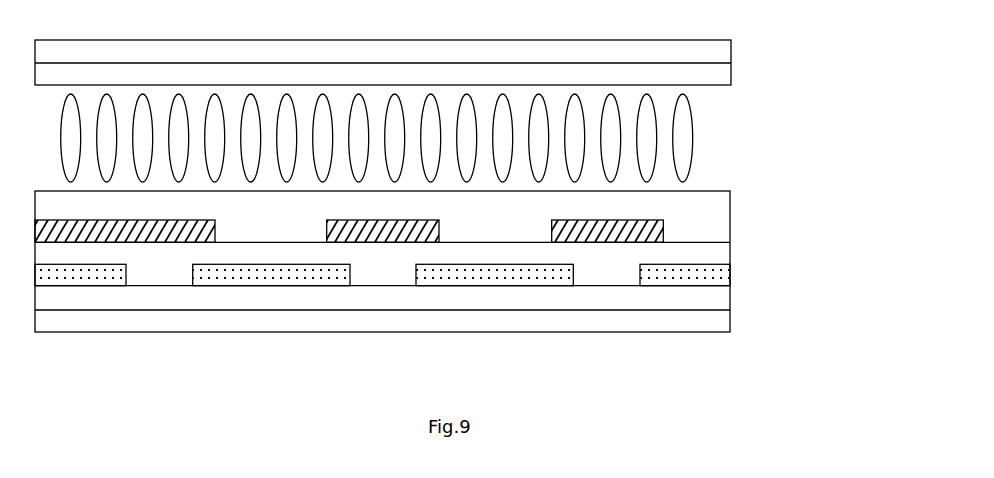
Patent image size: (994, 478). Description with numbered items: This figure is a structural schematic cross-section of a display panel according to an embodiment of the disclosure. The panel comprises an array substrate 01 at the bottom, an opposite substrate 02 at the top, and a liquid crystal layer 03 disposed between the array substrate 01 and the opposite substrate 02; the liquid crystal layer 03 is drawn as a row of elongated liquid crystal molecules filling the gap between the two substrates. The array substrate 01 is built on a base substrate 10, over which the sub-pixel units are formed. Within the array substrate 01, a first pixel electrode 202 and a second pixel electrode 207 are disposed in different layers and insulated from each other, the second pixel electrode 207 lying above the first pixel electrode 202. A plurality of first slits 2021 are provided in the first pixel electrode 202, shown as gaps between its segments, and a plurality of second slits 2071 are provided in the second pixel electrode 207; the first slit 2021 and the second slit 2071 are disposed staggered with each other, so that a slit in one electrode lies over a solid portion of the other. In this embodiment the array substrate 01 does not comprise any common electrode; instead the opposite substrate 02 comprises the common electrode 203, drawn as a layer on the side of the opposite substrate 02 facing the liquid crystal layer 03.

The opposite substrate 02 is at (787, 31).
The common electrode 203 is at (680, 76).
The liquid crystal layer 03 is at (680, 139).
The array substrate 01 is at (803, 189).
The second slit 2071 is at (660, 215).
The second pixel electrode 207 is at (650, 231).
The first pixel electrode 202 is at (712, 275).
The first slit 2021 is at (702, 318).
The base substrate 10 is at (707, 321).